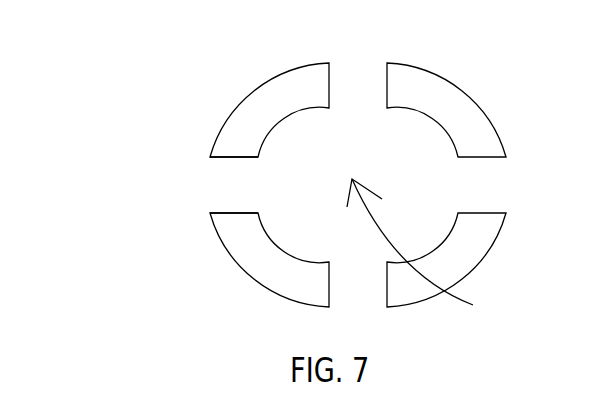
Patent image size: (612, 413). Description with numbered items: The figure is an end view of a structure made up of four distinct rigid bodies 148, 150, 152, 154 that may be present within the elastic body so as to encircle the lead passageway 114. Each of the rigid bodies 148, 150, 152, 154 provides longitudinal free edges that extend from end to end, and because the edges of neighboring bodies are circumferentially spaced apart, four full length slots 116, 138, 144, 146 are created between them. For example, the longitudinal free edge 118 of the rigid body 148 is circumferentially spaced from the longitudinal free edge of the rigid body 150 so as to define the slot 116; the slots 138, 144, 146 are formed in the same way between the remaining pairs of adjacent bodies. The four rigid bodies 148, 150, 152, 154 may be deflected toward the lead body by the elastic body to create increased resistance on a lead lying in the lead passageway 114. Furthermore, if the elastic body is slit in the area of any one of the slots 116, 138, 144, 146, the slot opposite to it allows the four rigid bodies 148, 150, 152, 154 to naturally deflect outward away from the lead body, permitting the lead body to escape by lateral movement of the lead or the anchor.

The lead passageway 114 is at (426, 249).
The slot 116 is at (220, 188).
The longitudinal free edge 118 is at (210, 157).
The slot 138 is at (493, 192).
The slot 144 is at (357, 77).
The slot 146 is at (367, 300).
The rigid body 148 is at (255, 115).
The rigid body 150 is at (250, 250).
The rigid body 152 is at (465, 250).
The rigid body 154 is at (455, 108).